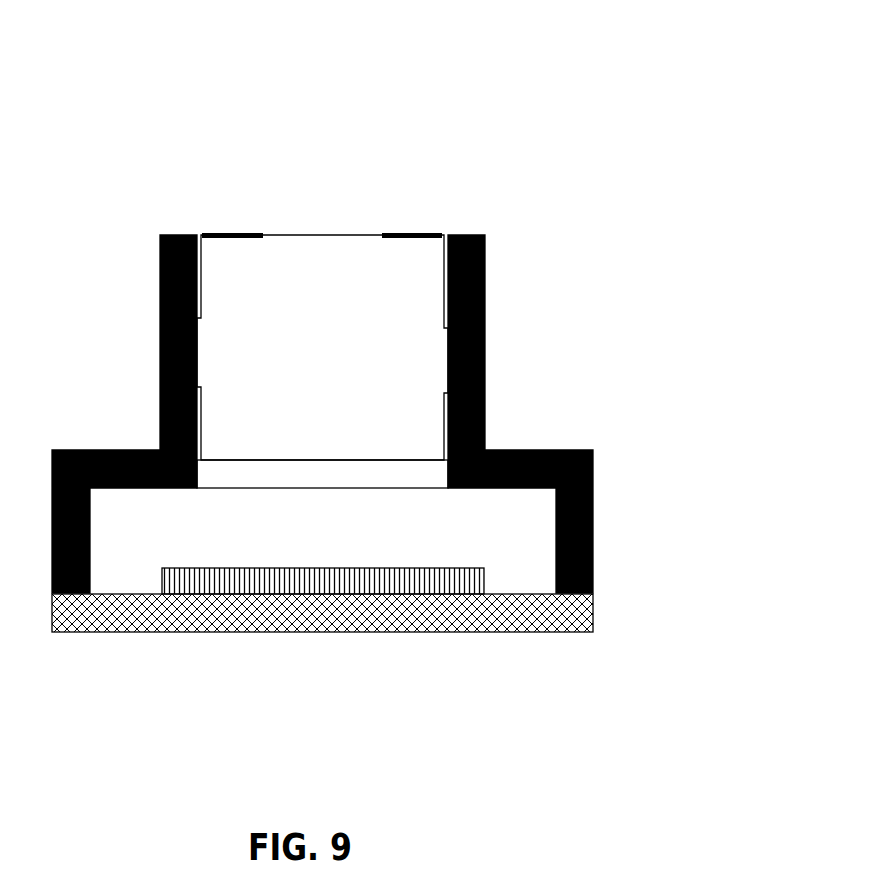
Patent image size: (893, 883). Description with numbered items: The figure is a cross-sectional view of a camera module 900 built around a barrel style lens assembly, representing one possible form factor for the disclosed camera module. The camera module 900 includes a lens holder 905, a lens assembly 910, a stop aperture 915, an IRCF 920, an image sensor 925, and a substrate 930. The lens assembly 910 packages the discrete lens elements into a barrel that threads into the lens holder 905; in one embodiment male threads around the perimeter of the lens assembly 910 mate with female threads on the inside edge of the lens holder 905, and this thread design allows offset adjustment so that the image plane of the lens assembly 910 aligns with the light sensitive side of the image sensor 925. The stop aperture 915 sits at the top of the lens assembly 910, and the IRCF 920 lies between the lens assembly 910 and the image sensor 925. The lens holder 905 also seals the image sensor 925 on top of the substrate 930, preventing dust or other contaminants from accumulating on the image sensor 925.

The camera module 900 is at (538, 73).
The lens holder 905 is at (485, 300).
The lens assembly 910 is at (337, 390).
The stop aperture 915 is at (402, 232).
The IRCF 920 is at (363, 485).
The image sensor 925 is at (409, 591).
The substrate 930 is at (392, 623).